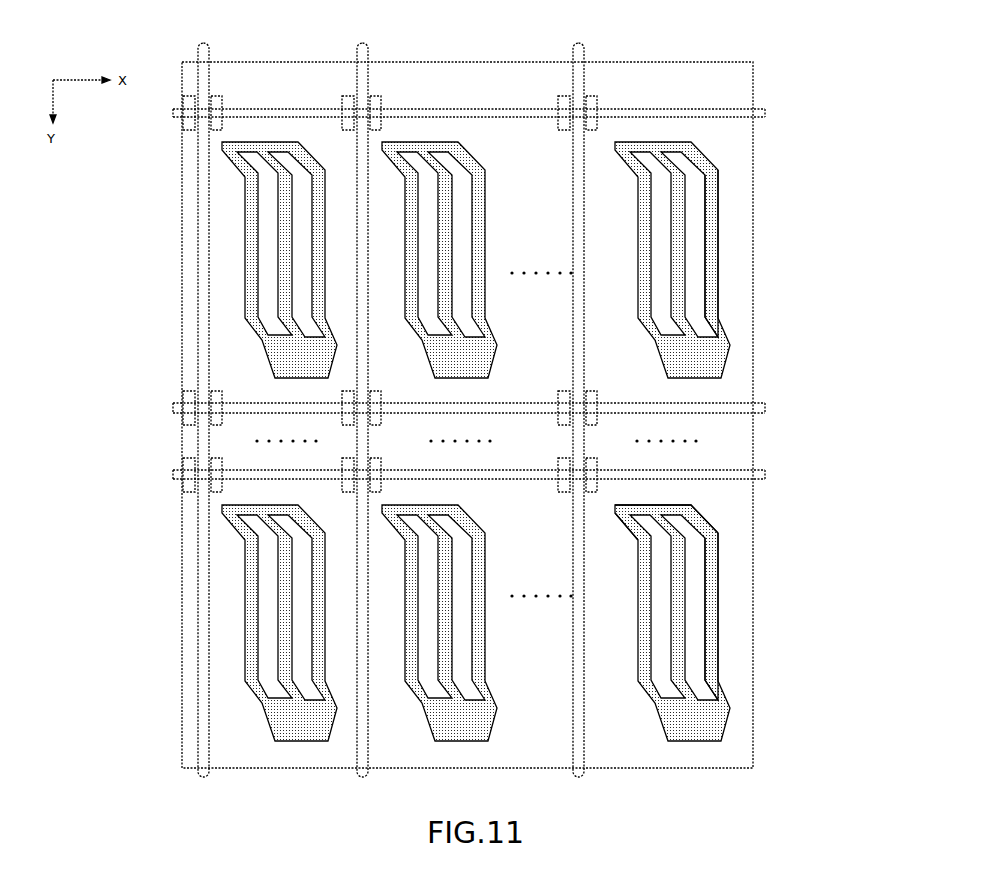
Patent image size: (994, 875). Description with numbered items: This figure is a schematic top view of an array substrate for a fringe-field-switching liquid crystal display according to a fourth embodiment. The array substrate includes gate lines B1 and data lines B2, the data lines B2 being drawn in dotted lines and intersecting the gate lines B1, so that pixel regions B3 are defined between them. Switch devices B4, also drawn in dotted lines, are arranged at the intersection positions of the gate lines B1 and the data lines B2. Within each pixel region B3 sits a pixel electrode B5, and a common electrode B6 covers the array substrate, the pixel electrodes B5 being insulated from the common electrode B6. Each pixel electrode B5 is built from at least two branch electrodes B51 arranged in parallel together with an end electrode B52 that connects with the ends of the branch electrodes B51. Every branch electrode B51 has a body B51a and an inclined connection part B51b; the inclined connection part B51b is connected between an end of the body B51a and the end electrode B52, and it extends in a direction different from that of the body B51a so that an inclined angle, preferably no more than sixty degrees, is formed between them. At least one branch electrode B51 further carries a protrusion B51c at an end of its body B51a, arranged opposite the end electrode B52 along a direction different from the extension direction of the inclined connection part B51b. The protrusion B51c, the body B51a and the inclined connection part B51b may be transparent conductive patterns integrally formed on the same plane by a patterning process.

The gate line B1 is at (727, 106).
The data line B2 is at (583, 73).
The pixel region B3 is at (223, 173).
The switch device B4 is at (183, 407).
The pixel electrode B5 is at (718, 610).
The branch electrode B51 is at (718, 660).
The body B51a is at (718, 282).
The inclined connection part B51b is at (710, 163).
The protrusion B51c is at (445, 152).
The end electrode B52 is at (653, 505).
The common electrode B6 is at (753, 337).